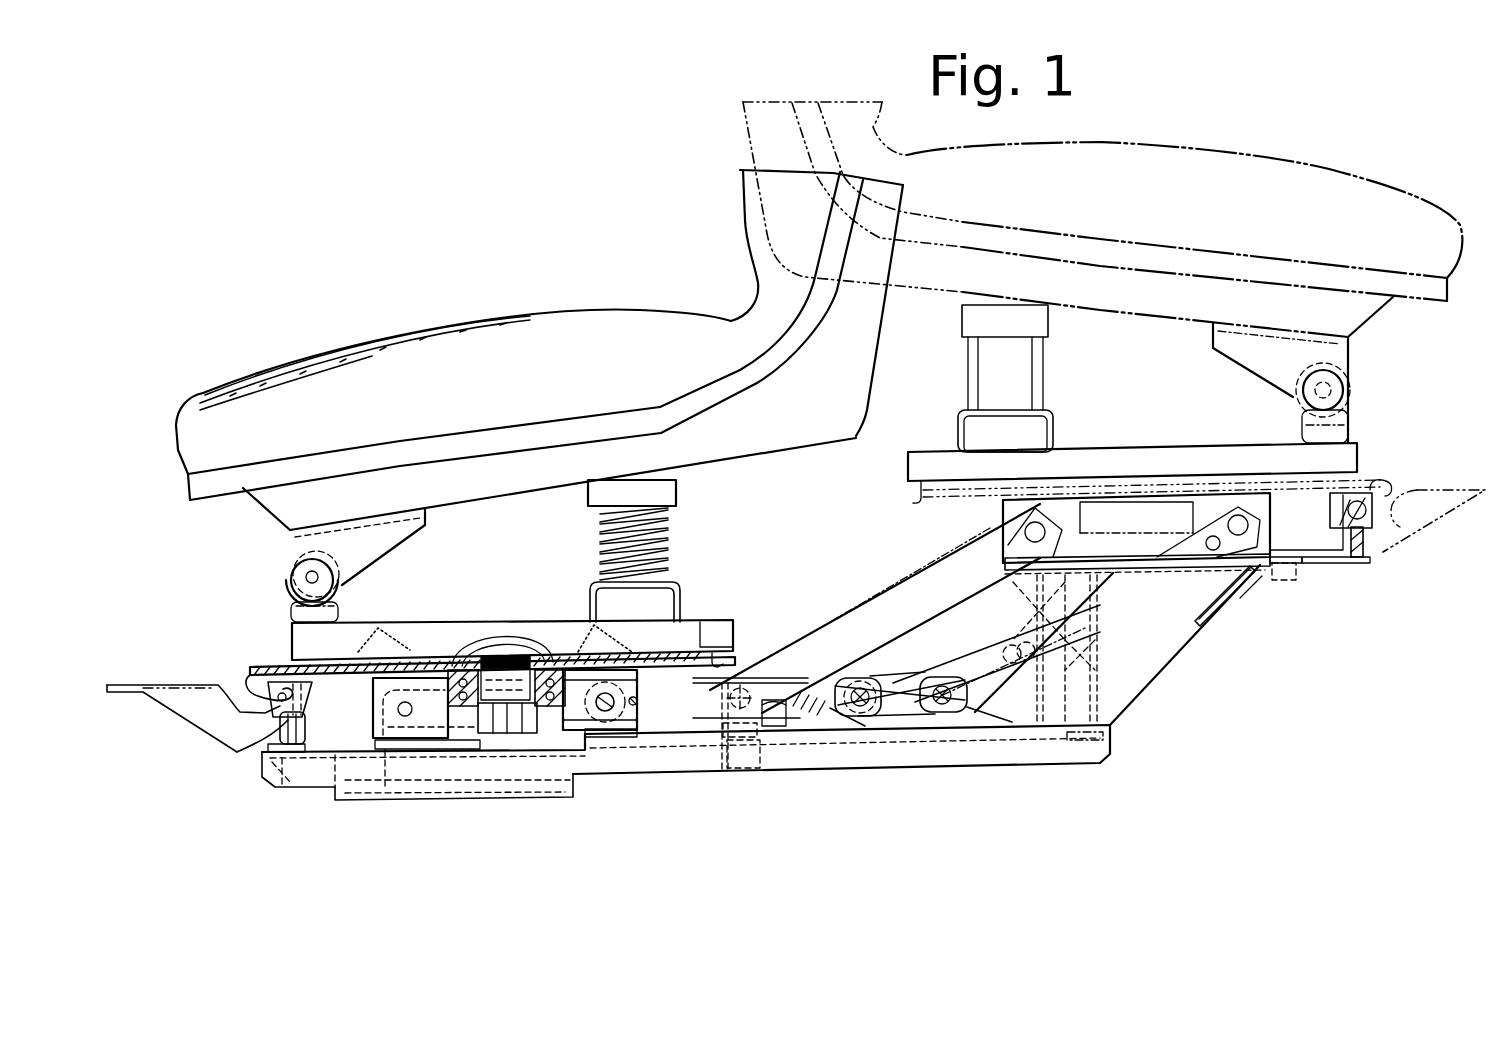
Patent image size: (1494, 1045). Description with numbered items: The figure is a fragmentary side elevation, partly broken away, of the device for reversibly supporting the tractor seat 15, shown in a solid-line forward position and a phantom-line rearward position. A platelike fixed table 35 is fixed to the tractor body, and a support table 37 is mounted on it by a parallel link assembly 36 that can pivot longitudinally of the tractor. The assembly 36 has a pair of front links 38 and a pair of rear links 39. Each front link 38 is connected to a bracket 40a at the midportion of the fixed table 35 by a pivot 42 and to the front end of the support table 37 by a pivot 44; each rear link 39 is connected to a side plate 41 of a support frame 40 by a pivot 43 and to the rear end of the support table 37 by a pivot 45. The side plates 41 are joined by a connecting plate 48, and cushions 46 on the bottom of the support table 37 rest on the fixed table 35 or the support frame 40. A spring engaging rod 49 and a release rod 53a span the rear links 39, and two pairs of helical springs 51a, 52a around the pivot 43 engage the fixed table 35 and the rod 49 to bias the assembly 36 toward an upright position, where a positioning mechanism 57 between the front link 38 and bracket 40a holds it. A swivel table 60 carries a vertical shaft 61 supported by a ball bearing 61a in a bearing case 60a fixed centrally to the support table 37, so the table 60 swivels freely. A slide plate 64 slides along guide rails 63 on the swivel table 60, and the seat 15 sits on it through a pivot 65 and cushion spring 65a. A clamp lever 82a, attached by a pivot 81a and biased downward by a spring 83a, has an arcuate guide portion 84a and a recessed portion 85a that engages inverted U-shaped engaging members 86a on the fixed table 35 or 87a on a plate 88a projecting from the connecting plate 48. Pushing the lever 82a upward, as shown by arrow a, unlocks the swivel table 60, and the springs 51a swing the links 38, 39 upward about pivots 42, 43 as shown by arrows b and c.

The seat 15 is at (650, 328).
The fixed table 35 is at (650, 764).
The parallel link assembly 36 is at (700, 728).
The support table 37 is at (425, 668).
The front link 38 is at (712, 692).
The rear link 39 is at (822, 712).
The support frame 40 is at (1114, 570).
The bracket 40a is at (790, 740).
The side plate 41 is at (1142, 688).
The pivot 42 is at (746, 698).
The pivot 43 is at (957, 708).
The pivot 44 is at (392, 714).
The pivot 45 is at (603, 712).
The cushion 46 is at (408, 750).
The connecting plate 48 is at (1240, 598).
The spring engaging rod 49 is at (856, 688).
The helical spring 51a is at (908, 697).
The helical spring 52a is at (945, 705).
The release rod 53a is at (637, 699).
The positioning mechanism 57 is at (745, 778).
The swivel table 60 is at (568, 660).
The bearing case 60a is at (566, 722).
The vertical shaft 61 is at (505, 702).
The ball bearing 61a is at (548, 671).
The guide rail 63 is at (378, 664).
The slide plate 64 is at (470, 632).
The pivot 65 is at (312, 577).
The cushion spring 65a is at (672, 524).
The pivot 81a is at (266, 688).
The clamp lever 82a is at (180, 703).
The spring 83a is at (270, 680).
The arcuate guide portion 84a is at (275, 775).
The engaging recessed portion 85a is at (275, 740).
The engaging member 86a is at (302, 752).
The engaging member 87a is at (1370, 524).
The plate 88a is at (1345, 565).
The arrow a is at (215, 688).
The arrow b is at (736, 652).
The arrow c is at (990, 647).